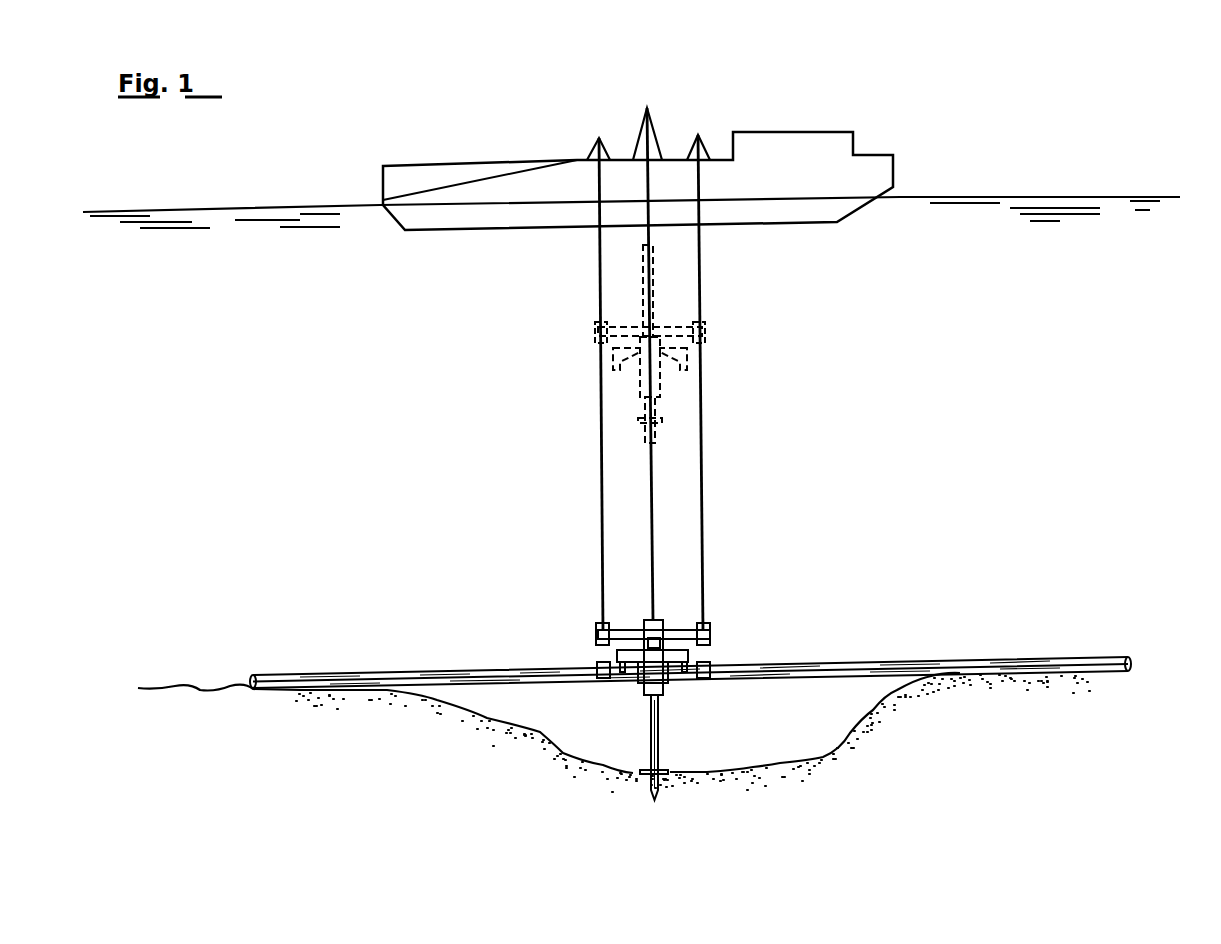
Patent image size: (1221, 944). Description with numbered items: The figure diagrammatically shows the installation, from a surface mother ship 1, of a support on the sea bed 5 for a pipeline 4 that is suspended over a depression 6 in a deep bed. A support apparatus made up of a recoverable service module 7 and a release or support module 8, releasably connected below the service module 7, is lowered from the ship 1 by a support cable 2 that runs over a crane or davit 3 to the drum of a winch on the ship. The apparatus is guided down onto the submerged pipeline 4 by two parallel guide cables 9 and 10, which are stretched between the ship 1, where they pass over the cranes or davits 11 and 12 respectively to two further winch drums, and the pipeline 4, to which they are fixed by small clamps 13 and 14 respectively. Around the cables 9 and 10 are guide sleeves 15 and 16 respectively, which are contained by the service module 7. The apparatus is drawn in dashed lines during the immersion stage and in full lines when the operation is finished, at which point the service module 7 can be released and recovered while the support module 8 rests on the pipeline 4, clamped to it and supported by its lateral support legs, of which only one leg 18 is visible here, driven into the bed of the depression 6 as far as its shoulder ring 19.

The surface mother ship 1 is at (840, 145).
The support cable 2 is at (653, 520).
The crane or davit 3 is at (652, 133).
The pipeline 4 is at (453, 674).
The sea bed 5 is at (215, 692).
The depression 6 is at (791, 746).
The recoverable service module 7 is at (675, 318).
The release or support module 8 is at (669, 374).
The guide cable 9 is at (601, 467).
The guide cable 10 is at (702, 465).
The crane or davit 11 is at (592, 153).
The crane or davit 12 is at (703, 148).
The small clamp 13 is at (602, 680).
The small clamp 14 is at (705, 674).
The guide sleeve 15 is at (597, 330).
The guide sleeve 16 is at (707, 327).
The lateral support leg 18 is at (651, 728).
The shoulder ring 19 is at (664, 771).